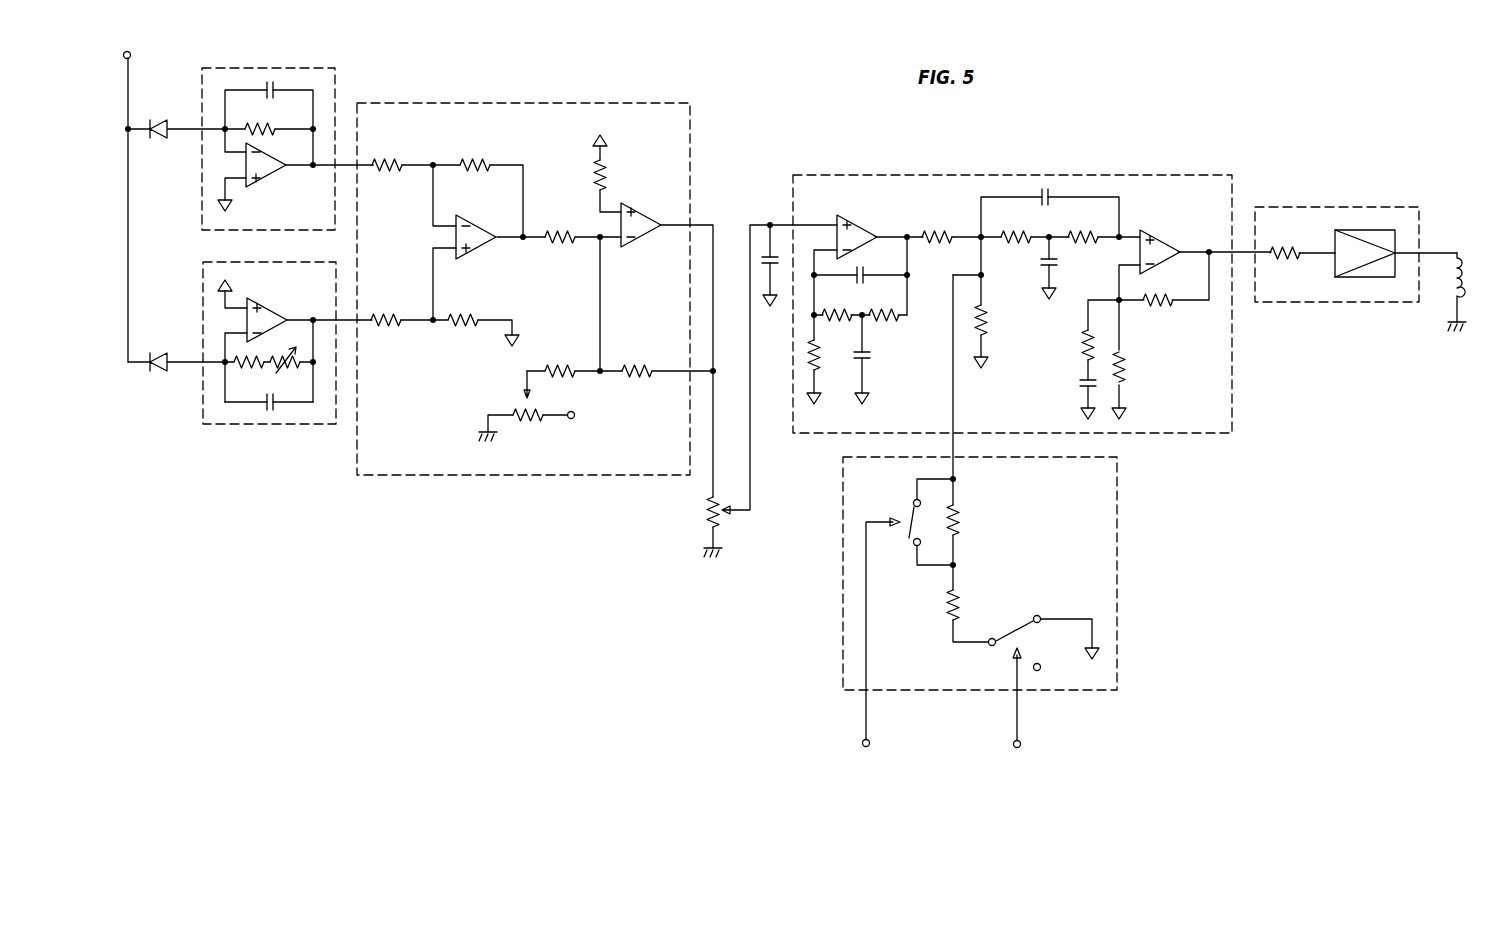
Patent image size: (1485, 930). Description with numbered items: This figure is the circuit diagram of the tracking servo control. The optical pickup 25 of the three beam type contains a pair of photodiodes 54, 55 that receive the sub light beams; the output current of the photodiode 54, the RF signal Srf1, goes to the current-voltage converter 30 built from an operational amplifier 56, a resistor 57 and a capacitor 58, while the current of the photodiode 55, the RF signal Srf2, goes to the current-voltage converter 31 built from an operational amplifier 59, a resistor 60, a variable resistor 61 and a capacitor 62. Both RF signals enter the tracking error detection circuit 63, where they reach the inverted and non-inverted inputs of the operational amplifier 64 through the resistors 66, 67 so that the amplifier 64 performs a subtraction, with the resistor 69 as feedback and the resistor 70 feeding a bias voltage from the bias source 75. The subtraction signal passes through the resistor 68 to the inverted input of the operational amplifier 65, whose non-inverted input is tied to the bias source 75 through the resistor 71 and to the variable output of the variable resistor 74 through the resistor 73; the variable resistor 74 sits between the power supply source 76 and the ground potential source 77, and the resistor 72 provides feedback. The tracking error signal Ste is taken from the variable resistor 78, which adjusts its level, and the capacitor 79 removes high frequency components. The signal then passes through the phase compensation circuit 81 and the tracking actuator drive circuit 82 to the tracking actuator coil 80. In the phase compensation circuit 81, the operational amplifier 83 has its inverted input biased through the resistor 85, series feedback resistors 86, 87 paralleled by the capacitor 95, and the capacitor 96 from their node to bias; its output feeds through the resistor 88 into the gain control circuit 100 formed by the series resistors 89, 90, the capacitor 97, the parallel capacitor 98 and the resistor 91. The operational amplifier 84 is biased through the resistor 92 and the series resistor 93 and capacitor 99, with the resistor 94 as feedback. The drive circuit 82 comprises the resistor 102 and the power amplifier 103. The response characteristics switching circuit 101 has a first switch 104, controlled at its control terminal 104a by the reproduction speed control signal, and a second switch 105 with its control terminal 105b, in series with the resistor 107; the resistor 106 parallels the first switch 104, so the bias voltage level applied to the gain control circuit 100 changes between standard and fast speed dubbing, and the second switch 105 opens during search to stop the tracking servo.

The optical pickup 25 is at (147, 262).
The current-voltage converter 30 is at (301, 68).
The current-voltage converter 31 is at (233, 426).
The photodiode 54 is at (167, 120).
The photodiode 55 is at (163, 360).
The operational amplifier 56 is at (272, 178).
The resistor 57 is at (268, 125).
The capacitor 58 is at (268, 92).
The operational amplifier 59 is at (269, 316).
The resistor 60 is at (256, 370).
The variable resistor 61 is at (293, 371).
The capacitor 62 is at (282, 411).
The tracking error detection circuit 63 is at (672, 102).
The operational amplifier 64 is at (479, 246).
The operational amplifier 65 is at (644, 244).
The resistor 66 is at (388, 160).
The resistor 67 is at (387, 332).
The resistor 68 is at (560, 234).
The resistor 69 is at (476, 160).
The resistor 70 is at (462, 332).
The resistor 71 is at (612, 170).
The resistor 72 is at (641, 366).
The resistor 73 is at (557, 366).
The variable resistor 74 is at (530, 428).
The bias source 75 is at (858, 405).
The power supply source 76 is at (578, 418).
The ground potential source 77 is at (469, 445).
The variable resistor 78 is at (709, 513).
The capacitor 79 is at (768, 256).
The tracking actuator coil 80 is at (1458, 256).
The phase compensation circuit 81 is at (1199, 175).
The tracking actuator drive circuit 82 is at (1401, 206).
The operational amplifier 83 is at (866, 234).
The operational amplifier 84 is at (1166, 236).
The resistor 85 is at (810, 354).
The resistor 86 is at (864, 312).
The resistor 87 is at (836, 318).
The resistor 88 is at (940, 234).
The resistor 89 is at (1004, 244).
The resistor 90 is at (1082, 244).
The resistor 91 is at (990, 322).
The resistor 92 is at (1124, 364).
The resistor 93 is at (1080, 346).
The resistor 94 is at (1168, 306).
The capacitor 95 is at (860, 270).
The capacitor 96 is at (868, 359).
The capacitor 97 is at (1054, 268).
The capacitor 98 is at (1052, 202).
The capacitor 99 is at (1080, 385).
The gain control circuit 100 is at (1024, 305).
The response characteristics switching circuit 101 is at (1117, 630).
The resistor 102 is at (1290, 250).
The power amplifier 103 is at (1361, 278).
The first switch 104 is at (904, 512).
The control terminal 104a is at (870, 748).
The second switch 105 is at (1006, 634).
The switch control terminal 105b is at (1020, 748).
The resistor 106 is at (961, 519).
The resistor 107 is at (944, 610).